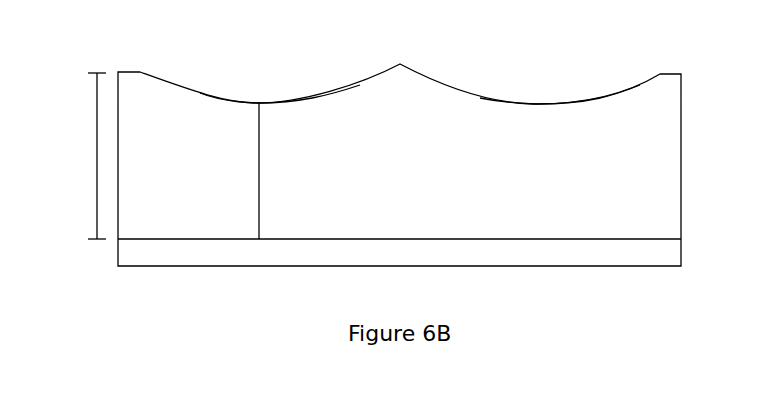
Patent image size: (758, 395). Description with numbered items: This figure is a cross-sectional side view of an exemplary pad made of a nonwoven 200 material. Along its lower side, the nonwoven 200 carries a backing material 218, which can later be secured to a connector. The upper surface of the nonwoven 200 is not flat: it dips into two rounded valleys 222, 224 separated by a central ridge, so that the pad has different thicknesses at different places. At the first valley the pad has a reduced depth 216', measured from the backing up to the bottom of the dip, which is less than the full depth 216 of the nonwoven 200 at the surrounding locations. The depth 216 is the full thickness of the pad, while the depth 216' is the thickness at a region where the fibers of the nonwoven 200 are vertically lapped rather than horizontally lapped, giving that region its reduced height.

The nonwoven 200 is at (459, 180).
The depth 216 is at (69, 156).
The reduced height 216' is at (226, 171).
The backing material 218 is at (399, 272).
The first concave valley 222 is at (280, 69).
The second concave valley 224 is at (560, 72).